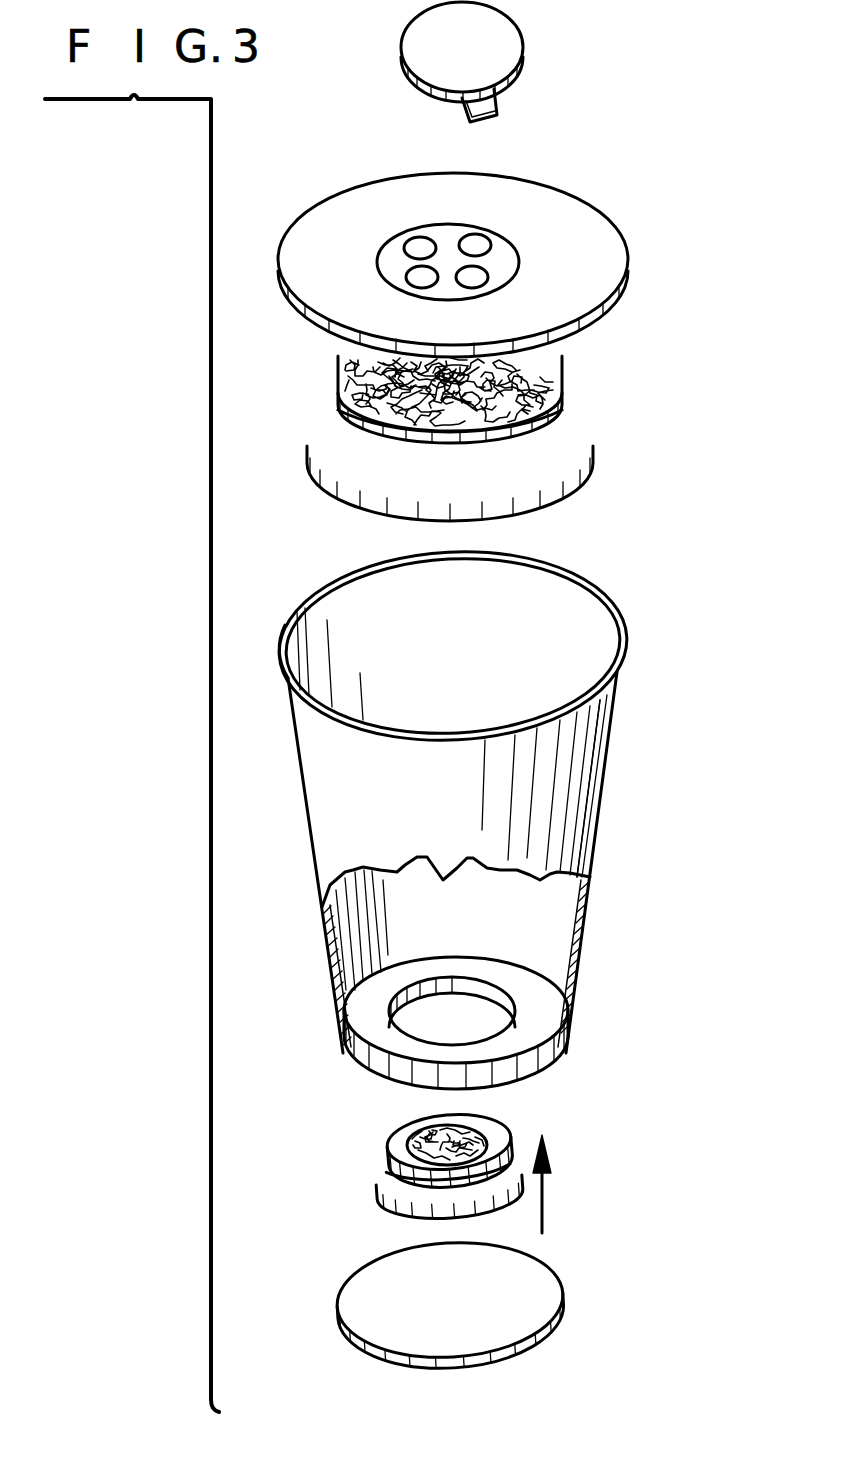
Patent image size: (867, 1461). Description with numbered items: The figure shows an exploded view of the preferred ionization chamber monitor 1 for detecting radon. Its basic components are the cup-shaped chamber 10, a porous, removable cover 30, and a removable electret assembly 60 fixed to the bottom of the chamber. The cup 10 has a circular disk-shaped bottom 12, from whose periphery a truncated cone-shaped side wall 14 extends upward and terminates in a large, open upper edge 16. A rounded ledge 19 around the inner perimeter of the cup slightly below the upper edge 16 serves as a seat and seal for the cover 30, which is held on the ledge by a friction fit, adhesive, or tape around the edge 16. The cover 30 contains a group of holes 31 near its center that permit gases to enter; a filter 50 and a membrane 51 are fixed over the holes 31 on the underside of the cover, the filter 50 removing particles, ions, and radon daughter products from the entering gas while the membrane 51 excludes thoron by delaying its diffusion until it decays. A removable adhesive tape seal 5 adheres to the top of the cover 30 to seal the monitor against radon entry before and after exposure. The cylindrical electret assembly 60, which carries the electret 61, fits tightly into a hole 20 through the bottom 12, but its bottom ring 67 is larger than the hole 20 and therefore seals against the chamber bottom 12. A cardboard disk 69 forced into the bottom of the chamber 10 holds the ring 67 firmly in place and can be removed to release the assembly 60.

The monitor 1 is at (722, 466).
The adhesive tape seal 5 is at (523, 55).
The cover assembly 30 is at (628, 284).
The holes 31 is at (485, 250).
The membrane 51 is at (560, 372).
The filter 50 is at (596, 446).
The cup-shaped chamber 10 is at (648, 758).
The upper edge 16 is at (568, 573).
The rounded ledge 19 is at (628, 645).
The side wall 14 is at (598, 823).
The bottom 12 is at (560, 1058).
The hole 20 is at (490, 1018).
The electret assembly 60 is at (402, 1126).
The electret 61 is at (478, 1135).
The bottom ring 67 is at (378, 1192).
The cardboard disk 69 is at (560, 1298).